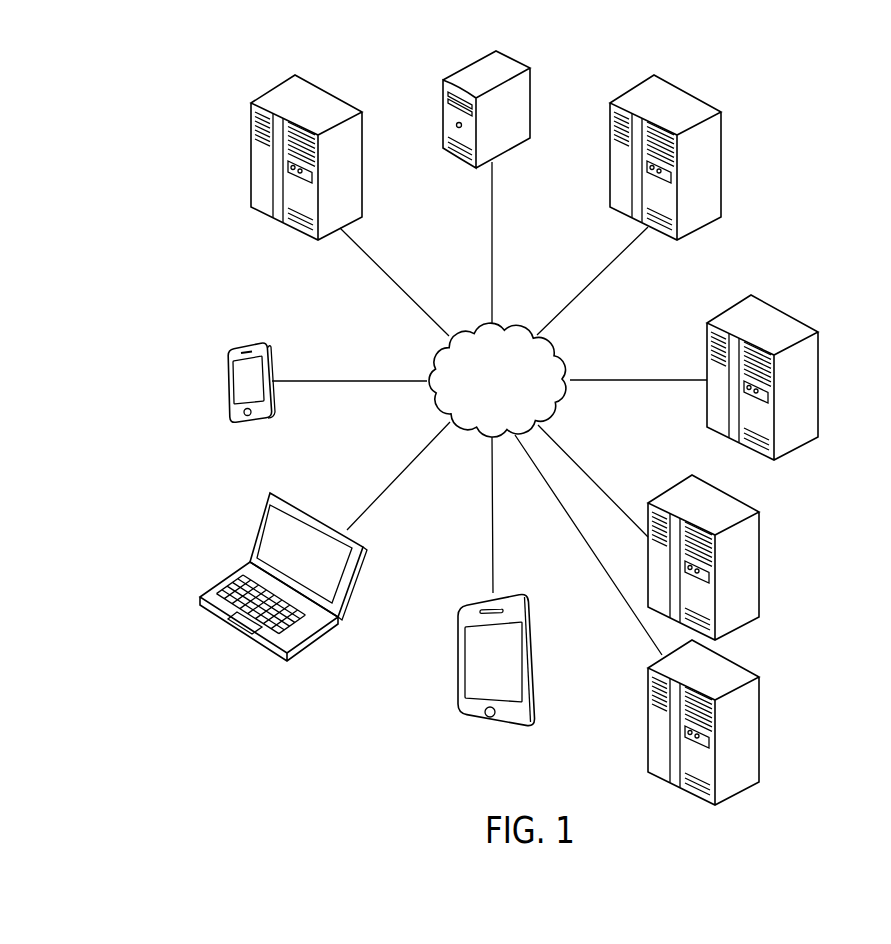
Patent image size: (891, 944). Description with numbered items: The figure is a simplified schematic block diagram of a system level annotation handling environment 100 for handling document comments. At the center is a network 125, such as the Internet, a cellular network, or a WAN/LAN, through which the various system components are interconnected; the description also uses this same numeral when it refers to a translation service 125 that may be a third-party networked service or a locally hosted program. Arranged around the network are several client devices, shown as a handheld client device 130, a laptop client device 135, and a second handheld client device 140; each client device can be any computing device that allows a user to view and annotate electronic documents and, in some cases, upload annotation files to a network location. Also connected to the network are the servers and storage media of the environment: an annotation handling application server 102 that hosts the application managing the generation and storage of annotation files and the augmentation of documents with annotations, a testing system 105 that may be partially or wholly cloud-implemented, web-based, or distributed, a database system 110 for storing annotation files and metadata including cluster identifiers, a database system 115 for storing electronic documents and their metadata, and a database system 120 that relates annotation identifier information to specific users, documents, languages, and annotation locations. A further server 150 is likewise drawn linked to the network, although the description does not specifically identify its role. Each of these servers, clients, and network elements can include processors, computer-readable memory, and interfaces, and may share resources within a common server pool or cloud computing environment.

The system level annotation handling environment 100 is at (167, 148).
The annotation handling application server 102 is at (533, 102).
The testing system 105 is at (363, 163).
The database system 110 is at (819, 387).
The database system 115 is at (760, 567).
The database system 120 is at (723, 167).
The network 125 is at (568, 356).
The client device 130 is at (273, 357).
The client device 135 is at (315, 642).
The client device 140 is at (537, 662).
The server 150 is at (760, 730).